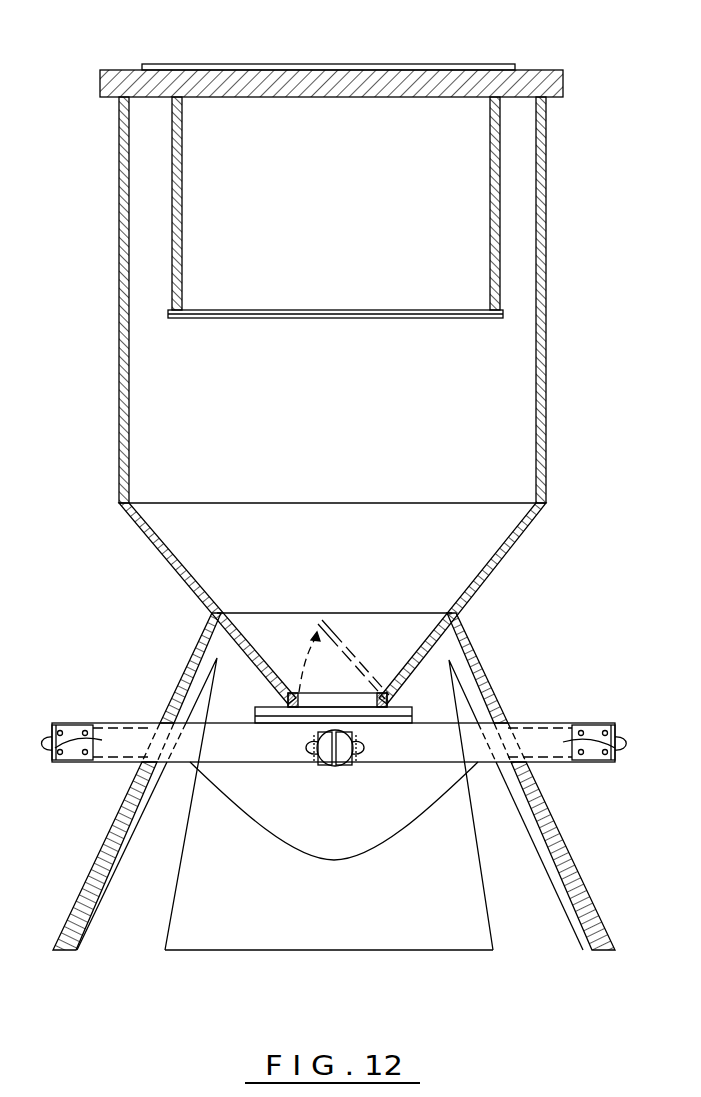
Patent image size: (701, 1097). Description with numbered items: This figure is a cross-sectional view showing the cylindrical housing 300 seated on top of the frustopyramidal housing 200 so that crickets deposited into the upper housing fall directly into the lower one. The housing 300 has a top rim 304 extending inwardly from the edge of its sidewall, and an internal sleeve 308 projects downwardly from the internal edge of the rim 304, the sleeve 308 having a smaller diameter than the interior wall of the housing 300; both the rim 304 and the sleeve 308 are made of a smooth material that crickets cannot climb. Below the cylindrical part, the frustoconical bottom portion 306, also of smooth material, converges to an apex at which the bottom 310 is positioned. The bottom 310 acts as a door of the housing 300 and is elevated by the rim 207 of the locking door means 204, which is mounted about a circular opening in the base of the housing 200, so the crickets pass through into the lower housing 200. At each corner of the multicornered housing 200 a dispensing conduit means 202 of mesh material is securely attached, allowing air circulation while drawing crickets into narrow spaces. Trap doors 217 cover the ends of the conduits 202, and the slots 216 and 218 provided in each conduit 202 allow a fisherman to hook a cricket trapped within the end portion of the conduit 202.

The frustopyramidal housing 200 is at (368, 835).
The dispensing conduit means 202 is at (553, 722).
The door means 204 is at (412, 720).
The rim 207 is at (295, 690).
The slot 216 is at (129, 722).
The trap door 217 is at (348, 745).
The slot 218 is at (103, 764).
The cylindrical housing 300 is at (548, 268).
The top rim 304 is at (555, 70).
The frustoconical bottom portion 306 is at (500, 562).
The internal sleeve 308 is at (183, 255).
The bottom 310 is at (353, 643).